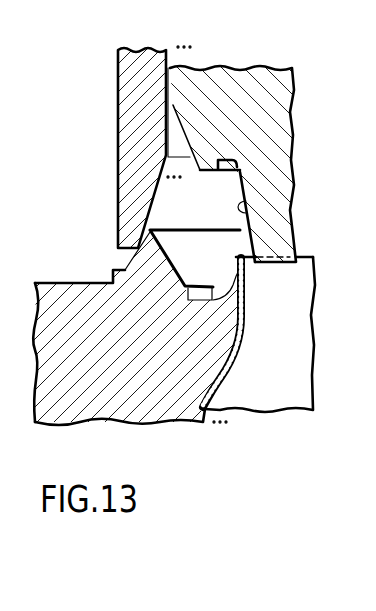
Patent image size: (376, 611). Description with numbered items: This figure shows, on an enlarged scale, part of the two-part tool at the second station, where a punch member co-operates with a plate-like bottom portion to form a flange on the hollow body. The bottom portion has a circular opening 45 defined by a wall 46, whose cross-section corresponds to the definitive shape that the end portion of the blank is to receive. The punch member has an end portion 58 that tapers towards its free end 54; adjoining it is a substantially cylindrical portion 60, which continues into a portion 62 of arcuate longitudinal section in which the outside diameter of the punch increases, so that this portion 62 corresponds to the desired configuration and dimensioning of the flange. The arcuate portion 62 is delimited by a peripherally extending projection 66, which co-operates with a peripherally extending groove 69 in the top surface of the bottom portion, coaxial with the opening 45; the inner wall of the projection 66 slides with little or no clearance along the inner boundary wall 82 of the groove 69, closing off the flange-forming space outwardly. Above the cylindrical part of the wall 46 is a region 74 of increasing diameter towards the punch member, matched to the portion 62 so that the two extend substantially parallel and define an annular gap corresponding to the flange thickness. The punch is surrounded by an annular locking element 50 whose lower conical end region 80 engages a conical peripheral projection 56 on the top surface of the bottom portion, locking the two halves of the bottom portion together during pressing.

The opening 45 is at (233, 416).
The wall 46 is at (204, 424).
The annular locking element 50 is at (144, 78).
The free end 54 is at (266, 263).
The peripherally extending projection 56 is at (148, 250).
The end portion 58 is at (240, 243).
The substantially cylindrical portion 60 is at (243, 212).
The arcuate portion 62 is at (242, 179).
The peripherally extending projection 66 is at (207, 164).
The groove 69 is at (193, 295).
The region 74 is at (249, 278).
The lower conical end region 80 is at (133, 203).
The inner boundary wall 82 is at (222, 364).